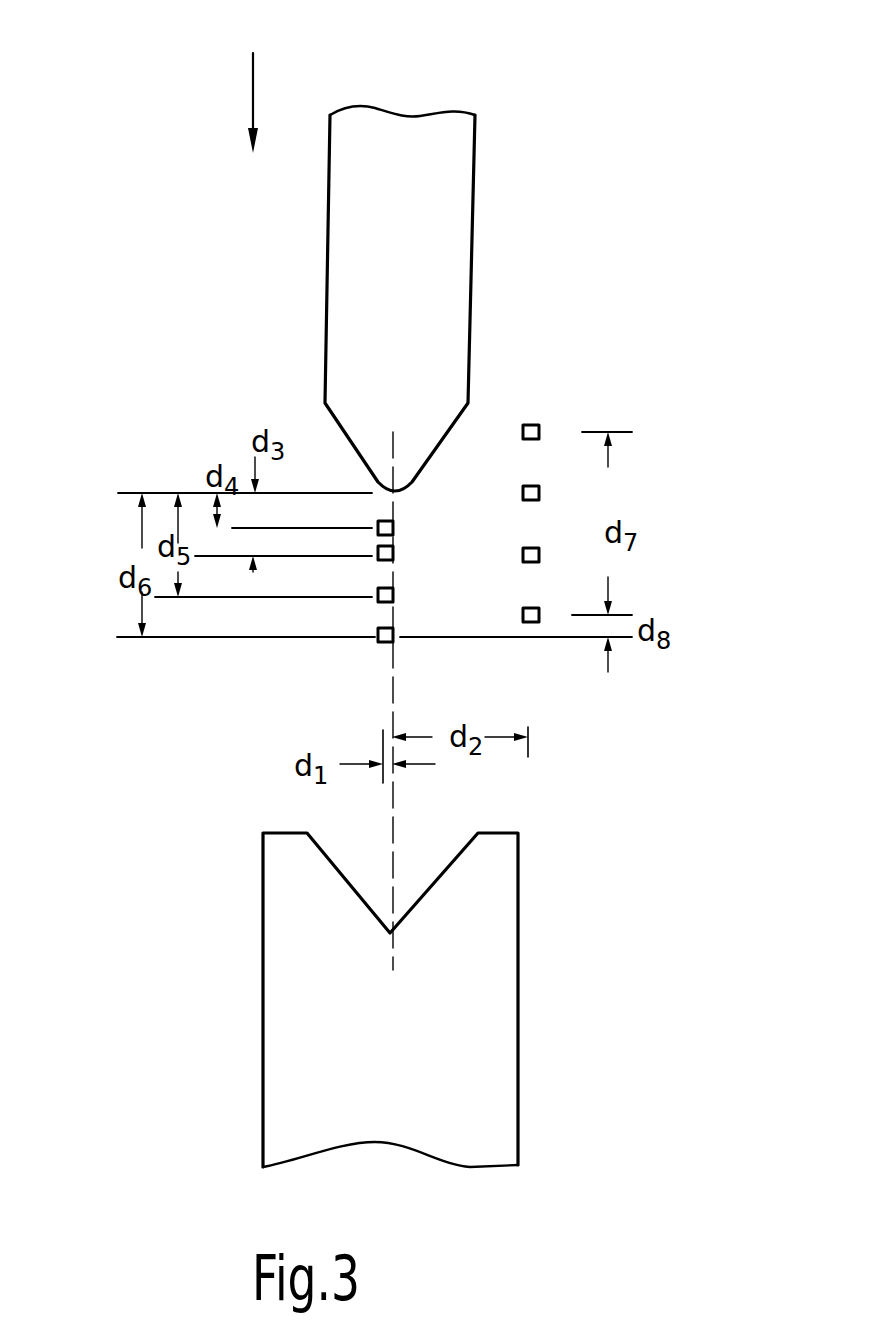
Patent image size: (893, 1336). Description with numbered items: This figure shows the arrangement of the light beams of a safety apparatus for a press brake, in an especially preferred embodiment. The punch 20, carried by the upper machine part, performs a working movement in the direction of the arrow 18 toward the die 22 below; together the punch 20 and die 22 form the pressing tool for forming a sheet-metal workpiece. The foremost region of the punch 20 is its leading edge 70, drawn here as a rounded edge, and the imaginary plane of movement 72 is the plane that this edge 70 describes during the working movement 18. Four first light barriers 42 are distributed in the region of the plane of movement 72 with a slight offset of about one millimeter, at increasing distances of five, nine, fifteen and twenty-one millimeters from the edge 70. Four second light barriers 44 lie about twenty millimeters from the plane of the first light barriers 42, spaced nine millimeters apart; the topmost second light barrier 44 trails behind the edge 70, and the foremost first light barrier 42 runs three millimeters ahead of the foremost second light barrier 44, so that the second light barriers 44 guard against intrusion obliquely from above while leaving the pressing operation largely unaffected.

The working movement direction arrow 18 is at (253, 92).
The punch 20 is at (477, 158).
The die 22 is at (295, 1087).
The first light barriers 42 is at (366, 650).
The second light barriers 44 is at (562, 404).
The leading edge 70 is at (400, 494).
The plane of movement 72 is at (390, 815).